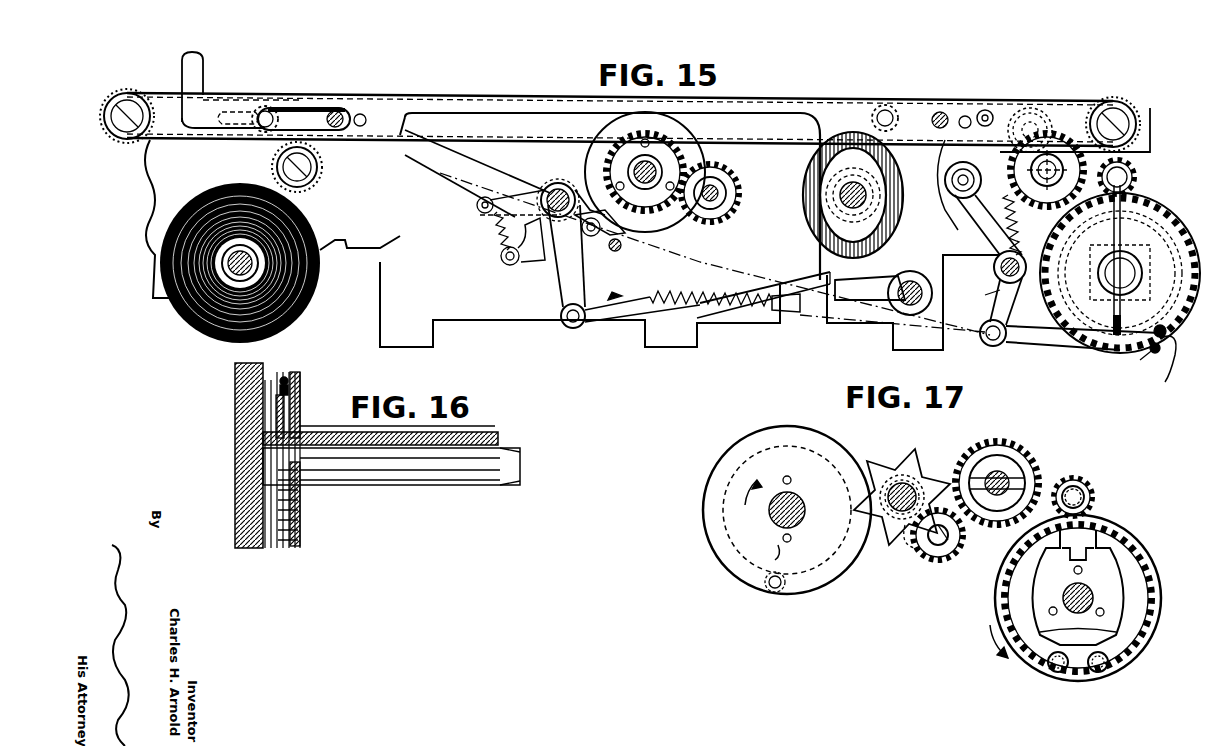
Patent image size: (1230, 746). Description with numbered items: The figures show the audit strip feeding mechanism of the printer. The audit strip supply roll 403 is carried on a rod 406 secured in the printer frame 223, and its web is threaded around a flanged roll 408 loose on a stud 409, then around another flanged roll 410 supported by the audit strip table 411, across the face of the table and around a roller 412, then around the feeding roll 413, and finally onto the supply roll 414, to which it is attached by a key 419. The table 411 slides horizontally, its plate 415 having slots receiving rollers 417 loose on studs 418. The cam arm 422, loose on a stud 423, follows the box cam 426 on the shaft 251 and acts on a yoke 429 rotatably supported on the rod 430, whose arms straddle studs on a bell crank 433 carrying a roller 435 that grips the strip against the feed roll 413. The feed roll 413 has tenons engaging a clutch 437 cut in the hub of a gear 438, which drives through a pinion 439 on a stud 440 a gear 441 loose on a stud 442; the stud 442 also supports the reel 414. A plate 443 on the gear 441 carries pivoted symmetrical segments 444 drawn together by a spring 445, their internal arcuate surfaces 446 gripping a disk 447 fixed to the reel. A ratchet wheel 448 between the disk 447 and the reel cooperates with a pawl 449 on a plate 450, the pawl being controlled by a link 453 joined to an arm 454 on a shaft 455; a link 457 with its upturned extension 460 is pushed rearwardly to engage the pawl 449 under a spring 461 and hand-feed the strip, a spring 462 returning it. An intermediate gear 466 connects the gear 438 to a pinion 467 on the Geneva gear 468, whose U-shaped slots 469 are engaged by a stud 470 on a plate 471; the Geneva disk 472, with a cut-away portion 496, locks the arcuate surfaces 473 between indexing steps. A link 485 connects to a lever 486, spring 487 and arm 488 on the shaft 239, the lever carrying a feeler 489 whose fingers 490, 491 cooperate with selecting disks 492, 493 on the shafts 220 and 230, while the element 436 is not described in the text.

In FIG. 15, the audit strip supply roll 403 is at (158, 238).
In FIG. 15, the rod 406 is at (215, 195).
In FIG. 15, the flanged roll 408 is at (273, 158).
In FIG. 15, the stud 409 is at (282, 170).
In FIG. 15, the flanged roll 410 is at (120, 95).
In FIG. 15, the audit strip table 411 is at (800, 105).
In FIG. 15, the roller 412 is at (1113, 101).
In FIG. 15, the feeding roll 413 is at (1023, 225).
In FIG. 15, the supply roll 414 is at (1060, 316).
In FIG. 16, the supply roll 414 is at (428, 490).
In FIG. 15, the plate 415 is at (330, 100).
In FIG. 15, the roller 417 is at (333, 118).
In FIG. 15, the stud 418 is at (330, 128).
In FIG. 15, the key 419 is at (1142, 192).
In FIG. 15, the shaft 220 is at (630, 168).
In FIG. 15, the printer frame 223 is at (480, 322).
In FIG. 16, the printer frame 223 is at (235, 380).
In FIG. 15, the shaft 230 is at (713, 205).
In FIG. 15, the shaft 239 is at (550, 185).
In FIG. 15, the shaft 251 is at (855, 182).
In FIG. 17, the shaft 251 is at (795, 498).
In FIG. 15, the cam arm 422 is at (880, 286).
In FIG. 15, the stud 423 is at (888, 296).
In FIG. 15, the box cam 426 is at (805, 198).
In FIG. 15, the yoke 429 is at (990, 288).
In FIG. 15, the rod 430 is at (958, 222).
In FIG. 17, the rod 430 is at (878, 502).
In FIG. 15, the bell crank 433 is at (1020, 136).
In FIG. 15, the roller 435 is at (1030, 108).
In FIG. 17, the pawl 436 is at (955, 538).
In FIG. 17, the clutch 437 is at (982, 475).
In FIG. 15, the gear 438 is at (1068, 108).
In FIG. 17, the gear 438 is at (1030, 450).
In FIG. 15, the pinion 439 is at (1133, 170).
In FIG. 17, the pinion 439 is at (1062, 477).
In FIG. 15, the stud 440 is at (1140, 170).
In FIG. 17, the stud 440 is at (1090, 490).
In FIG. 15, the gear 441 is at (1120, 273).
In FIG. 16, the gear 441 is at (268, 550).
In FIG. 17, the gear 441 is at (1142, 535).
In FIG. 16, the stud 442 is at (505, 432).
In FIG. 17, the stud 442 is at (1090, 590).
In FIG. 16, the plate 443 is at (282, 548).
In FIG. 17, the plate 443 is at (1035, 591).
In FIG. 16, the symmetrical segments 444 is at (302, 392).
In FIG. 17, the symmetrical segments 444 is at (1048, 666).
In FIG. 16, the spring 445 is at (286, 378).
In FIG. 17, the spring 445 is at (1080, 551).
In FIG. 17, the internal arcuate surfaces 446 is at (1078, 631).
In FIG. 16, the disk 447 is at (302, 410).
In FIG. 16, the ratchet wheel 448 is at (302, 520).
In FIG. 15, the pawl 449 is at (1150, 352).
In FIG. 16, the plate 450 is at (300, 488).
In FIG. 15, the link 453 is at (1003, 344).
In FIG. 15, the arm 454 is at (992, 305).
In FIG. 15, the shaft 455 is at (978, 286).
In FIG. 15, the link 457 is at (428, 172).
In FIG. 15, the upturned extension 460 is at (196, 52).
In FIG. 15, the spring 461 is at (1172, 365).
In FIG. 15, the spring 462 is at (700, 315).
In FIG. 17, the intermediate gear 466 is at (938, 562).
In FIG. 17, the pinion 467 is at (912, 550).
In FIG. 15, the Geneva gear 468 is at (986, 110).
In FIG. 17, the Geneva gear 468 is at (888, 455).
In FIG. 17, the U-shaped slots 469 is at (858, 520).
In FIG. 17, the stud 470 is at (772, 592).
In FIG. 17, the plate 471 is at (805, 594).
In FIG. 17, the Geneva disk 472 is at (752, 452).
In FIG. 17, the arcuate surfaces 473 is at (945, 450).
In FIG. 15, the link 485 is at (758, 270).
In FIG. 15, the lever 486 is at (562, 291).
In FIG. 15, the spring 487 is at (495, 232).
In FIG. 15, the arm 488 is at (500, 260).
In FIG. 15, the feeler 489 is at (590, 240).
In FIG. 15, the finger 490 is at (622, 246).
In FIG. 15, the finger 491 is at (566, 256).
In FIG. 15, the selecting disk 492 is at (585, 186).
In FIG. 15, the selecting disk 493 is at (605, 132).
In FIG. 17, the cut-away portion 496 is at (779, 548).